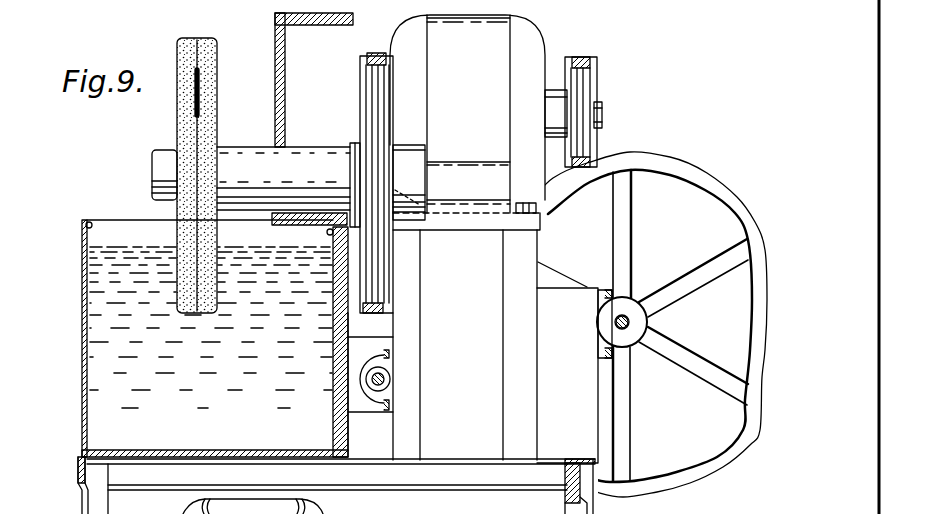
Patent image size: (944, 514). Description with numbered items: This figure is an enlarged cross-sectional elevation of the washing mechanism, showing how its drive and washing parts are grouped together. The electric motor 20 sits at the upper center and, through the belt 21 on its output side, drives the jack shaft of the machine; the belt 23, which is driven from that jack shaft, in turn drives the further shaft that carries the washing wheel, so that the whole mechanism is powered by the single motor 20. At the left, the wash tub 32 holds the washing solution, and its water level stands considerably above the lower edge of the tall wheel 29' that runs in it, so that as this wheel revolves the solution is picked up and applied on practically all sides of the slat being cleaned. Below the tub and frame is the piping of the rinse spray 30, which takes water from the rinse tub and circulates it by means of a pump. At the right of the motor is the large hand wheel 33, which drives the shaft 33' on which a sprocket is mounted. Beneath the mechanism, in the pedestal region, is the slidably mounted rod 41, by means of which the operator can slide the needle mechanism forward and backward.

The electric motor 20 is at (532, 34).
The belt 21 is at (592, 57).
The belt 23 is at (378, 53).
The grinding wheel 29' is at (176, 175).
The rinse spray 30 is at (183, 510).
The wash tub 32 is at (82, 282).
The hand wheel 33 is at (650, 312).
The shaft 33' is at (653, 324).
The rod 41 is at (385, 380).